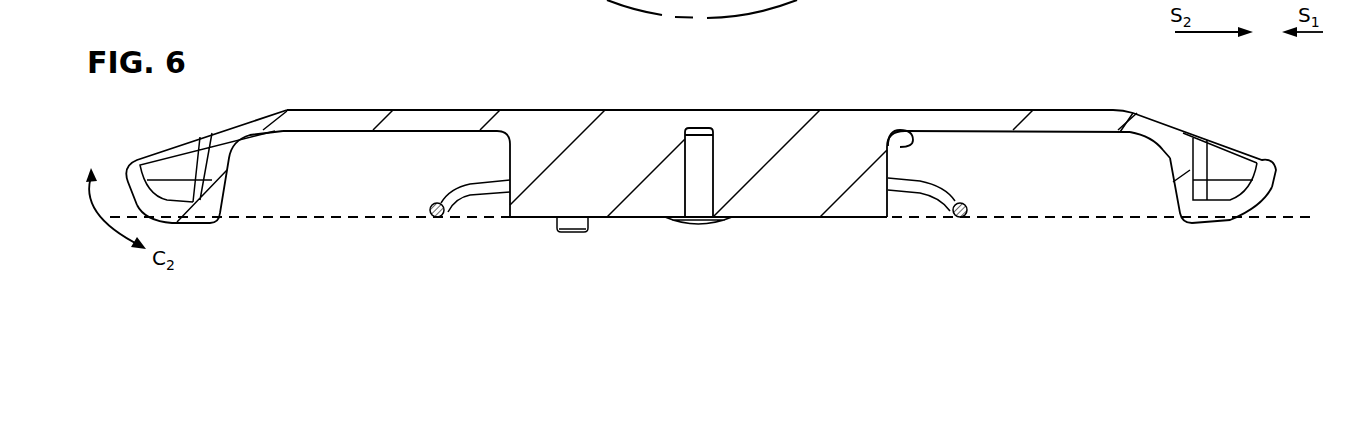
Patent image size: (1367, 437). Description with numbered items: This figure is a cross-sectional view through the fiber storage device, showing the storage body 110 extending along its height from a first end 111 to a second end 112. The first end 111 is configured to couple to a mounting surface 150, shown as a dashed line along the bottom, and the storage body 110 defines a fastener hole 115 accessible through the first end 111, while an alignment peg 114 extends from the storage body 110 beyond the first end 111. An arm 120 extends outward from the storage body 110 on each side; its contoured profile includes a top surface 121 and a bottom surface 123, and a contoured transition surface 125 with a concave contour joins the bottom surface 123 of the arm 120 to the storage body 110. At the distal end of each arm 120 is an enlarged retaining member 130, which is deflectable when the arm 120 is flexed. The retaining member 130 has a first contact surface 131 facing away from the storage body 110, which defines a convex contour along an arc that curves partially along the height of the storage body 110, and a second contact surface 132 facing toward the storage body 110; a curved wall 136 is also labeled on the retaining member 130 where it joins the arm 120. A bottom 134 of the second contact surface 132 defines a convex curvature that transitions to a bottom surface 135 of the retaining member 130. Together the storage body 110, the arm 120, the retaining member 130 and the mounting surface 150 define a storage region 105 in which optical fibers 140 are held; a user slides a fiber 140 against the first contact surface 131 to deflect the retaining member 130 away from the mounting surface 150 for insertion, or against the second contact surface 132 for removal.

The storage region 105 is at (1052, 181).
The storage body 110 is at (833, 181).
The first end 111 is at (770, 218).
The second end 112 is at (655, 110).
The alignment peg 114 is at (572, 233).
The fastener hole 115 is at (683, 175).
The arm 120 is at (460, 108).
The top surface 121 is at (315, 110).
The bottom surface 123 is at (950, 132).
The transition surface 125 is at (913, 135).
The retaining member 130 is at (165, 147).
The first contact surface 131 is at (148, 216).
The second contact surface 132 is at (225, 183).
The bottom 134 is at (218, 218).
The bottom surface 135 is at (707, 225).
The curved wall 136 is at (1162, 148).
The optical fiber 140 is at (450, 200).
The mounting surface 150 is at (1297, 219).